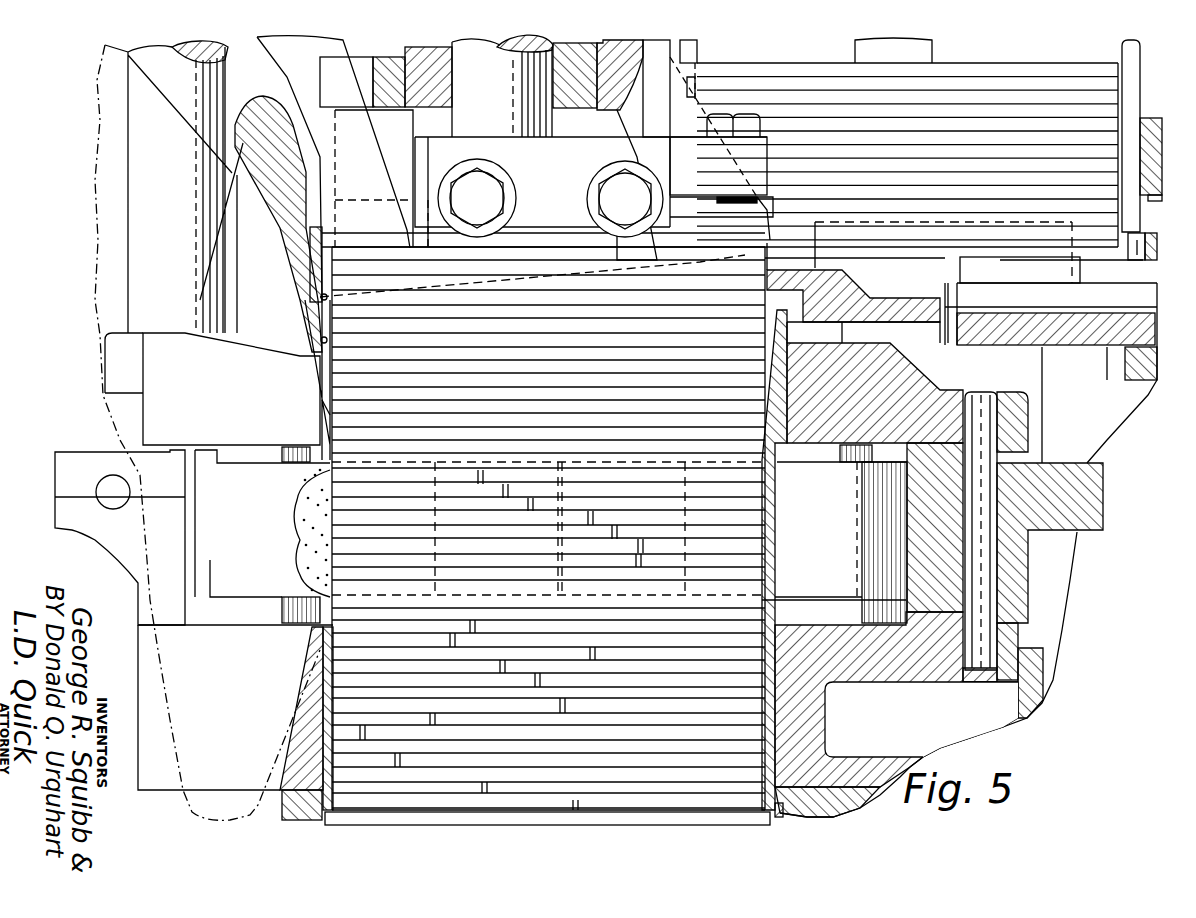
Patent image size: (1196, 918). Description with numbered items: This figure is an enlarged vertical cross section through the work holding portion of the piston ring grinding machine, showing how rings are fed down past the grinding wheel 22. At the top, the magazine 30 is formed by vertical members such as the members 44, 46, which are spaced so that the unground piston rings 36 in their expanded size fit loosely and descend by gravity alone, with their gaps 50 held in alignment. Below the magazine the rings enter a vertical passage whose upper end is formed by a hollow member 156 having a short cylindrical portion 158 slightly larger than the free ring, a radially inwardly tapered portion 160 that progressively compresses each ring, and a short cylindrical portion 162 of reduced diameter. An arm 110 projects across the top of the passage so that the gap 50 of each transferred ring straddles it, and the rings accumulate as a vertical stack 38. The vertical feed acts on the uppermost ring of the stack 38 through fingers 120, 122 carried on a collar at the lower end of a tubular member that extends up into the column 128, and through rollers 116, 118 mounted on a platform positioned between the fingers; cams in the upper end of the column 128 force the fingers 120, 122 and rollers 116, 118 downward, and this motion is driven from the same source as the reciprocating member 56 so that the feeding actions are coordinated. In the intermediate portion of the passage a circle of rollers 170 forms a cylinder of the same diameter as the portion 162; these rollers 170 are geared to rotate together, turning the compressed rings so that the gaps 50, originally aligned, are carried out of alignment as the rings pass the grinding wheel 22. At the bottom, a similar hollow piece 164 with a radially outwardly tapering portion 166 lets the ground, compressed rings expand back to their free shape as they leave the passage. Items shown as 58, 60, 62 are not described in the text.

The grinding wheel 22 is at (297, 534).
The magazine 30 is at (1048, 69).
The piston ring 36 is at (1008, 100).
The stack of piston rings 38 is at (321, 414).
The vertical member 44 is at (923, 62).
The vertical member 46 is at (1133, 77).
The gap 50 is at (328, 722).
The reciprocating member 56 is at (1143, 234).
The bolt 58 is at (1097, 345).
The end flange 60 is at (1145, 281).
The nut 62 is at (1128, 258).
The arm 110 is at (295, 93).
The roller 116 is at (647, 187).
The roller 118 is at (497, 182).
The finger 120 is at (717, 145).
The finger 122 is at (342, 240).
The column 128 is at (690, 60).
The hollow member 156 is at (298, 262).
The short cylindrical portion 158 is at (320, 297).
The radially inwardly tapered portion 160 is at (322, 362).
The short cylindrical portion of reduced diameter 162 is at (757, 463).
The hollow piece 164 is at (316, 663).
The radially outwardly tapering portion 166 is at (322, 760).
The roller 170 is at (813, 585).